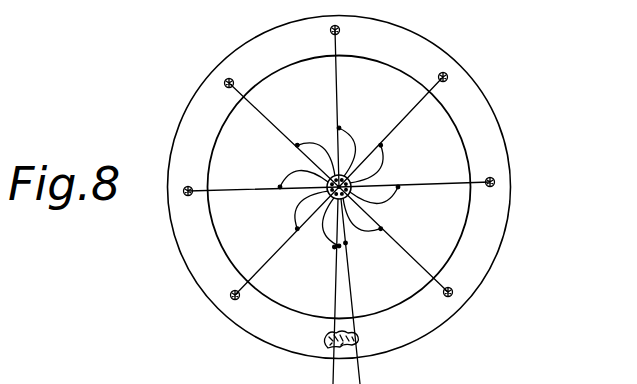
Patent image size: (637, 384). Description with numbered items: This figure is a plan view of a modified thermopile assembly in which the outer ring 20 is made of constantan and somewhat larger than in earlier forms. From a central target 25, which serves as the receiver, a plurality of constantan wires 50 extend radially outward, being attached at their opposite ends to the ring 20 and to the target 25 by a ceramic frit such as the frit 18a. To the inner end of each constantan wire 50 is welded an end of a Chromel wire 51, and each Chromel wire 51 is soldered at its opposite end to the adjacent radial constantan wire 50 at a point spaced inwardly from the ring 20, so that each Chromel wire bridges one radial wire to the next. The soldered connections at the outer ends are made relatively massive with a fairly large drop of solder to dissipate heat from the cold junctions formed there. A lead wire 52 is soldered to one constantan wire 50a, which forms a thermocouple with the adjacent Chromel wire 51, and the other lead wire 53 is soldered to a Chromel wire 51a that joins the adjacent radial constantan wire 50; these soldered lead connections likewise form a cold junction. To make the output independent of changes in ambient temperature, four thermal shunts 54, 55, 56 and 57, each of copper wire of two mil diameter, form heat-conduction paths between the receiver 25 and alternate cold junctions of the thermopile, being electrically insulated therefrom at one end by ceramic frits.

The ceramic frit 18a is at (108, 6).
The ring 20 is at (192, 262).
The central target 25 is at (351, 196).
The constantan wires 50 is at (341, 90).
The constantan wire 50a is at (347, 222).
The Chromel wires 51 is at (307, 143).
The Chromel wire 51a is at (332, 223).
The lead wire 52 is at (352, 297).
The lead wire 53 is at (331, 292).
The thermal shunt 54 is at (363, 168).
The thermal shunt 55 is at (368, 217).
The thermal shunt 56 is at (313, 207).
The thermal shunt 57 is at (320, 160).